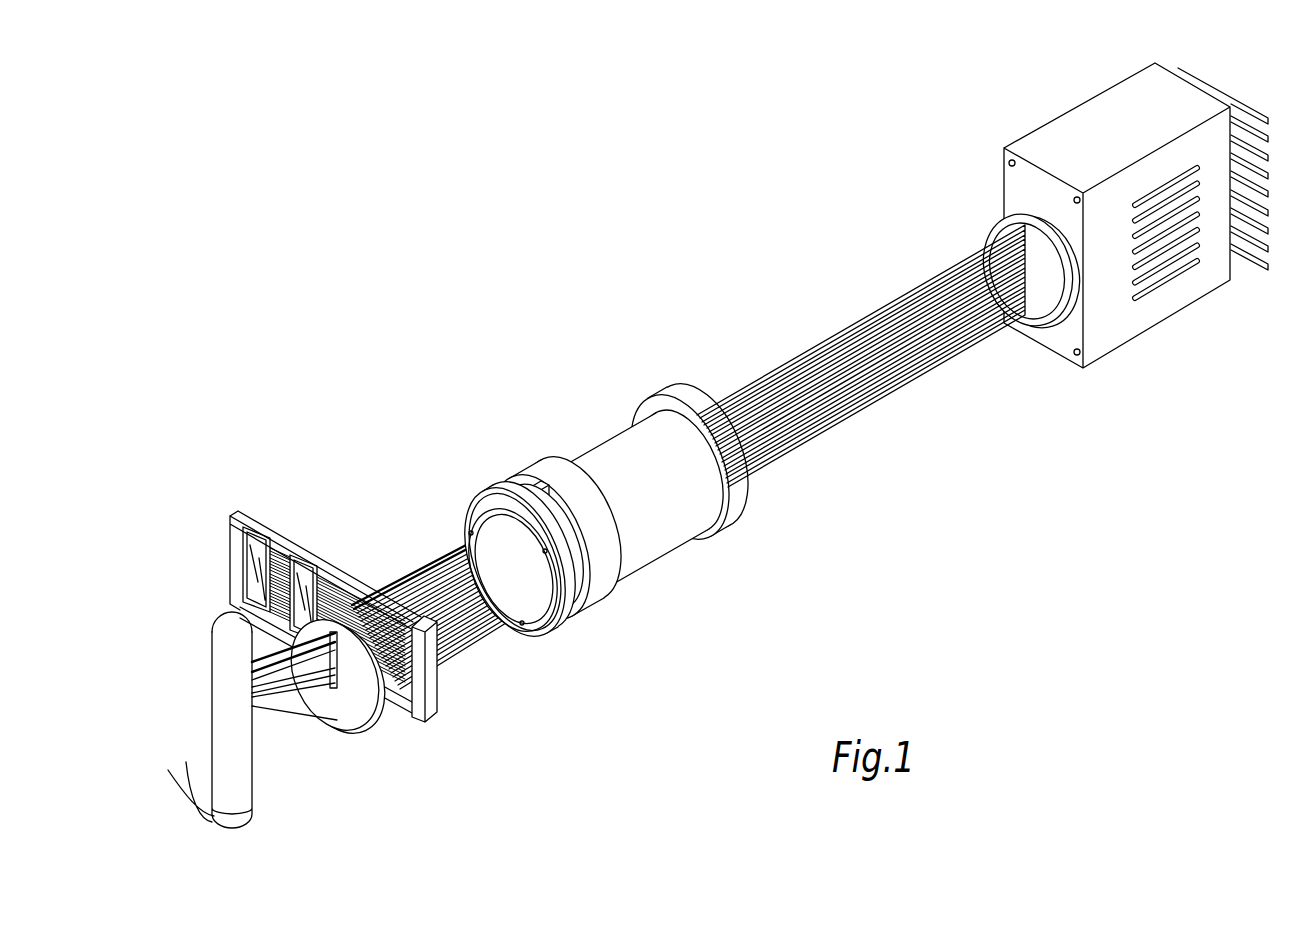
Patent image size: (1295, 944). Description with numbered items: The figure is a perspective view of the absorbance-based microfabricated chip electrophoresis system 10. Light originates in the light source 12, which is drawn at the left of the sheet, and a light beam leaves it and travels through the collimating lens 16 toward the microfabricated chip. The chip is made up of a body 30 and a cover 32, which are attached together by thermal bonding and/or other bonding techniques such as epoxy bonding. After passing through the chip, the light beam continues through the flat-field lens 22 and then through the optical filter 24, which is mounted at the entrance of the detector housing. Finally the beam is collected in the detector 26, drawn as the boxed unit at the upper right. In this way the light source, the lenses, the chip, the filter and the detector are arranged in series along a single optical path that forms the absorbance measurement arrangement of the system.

The absorbance-based electrophoresis system 10 is at (623, 197).
The light source 12 is at (208, 710).
The collimating lens 16 is at (362, 710).
The flat-field lens 22 is at (640, 552).
The optical filter 24 is at (990, 231).
The detector 26 is at (1128, 325).
The body 30 is at (350, 572).
The cover 32 is at (232, 616).